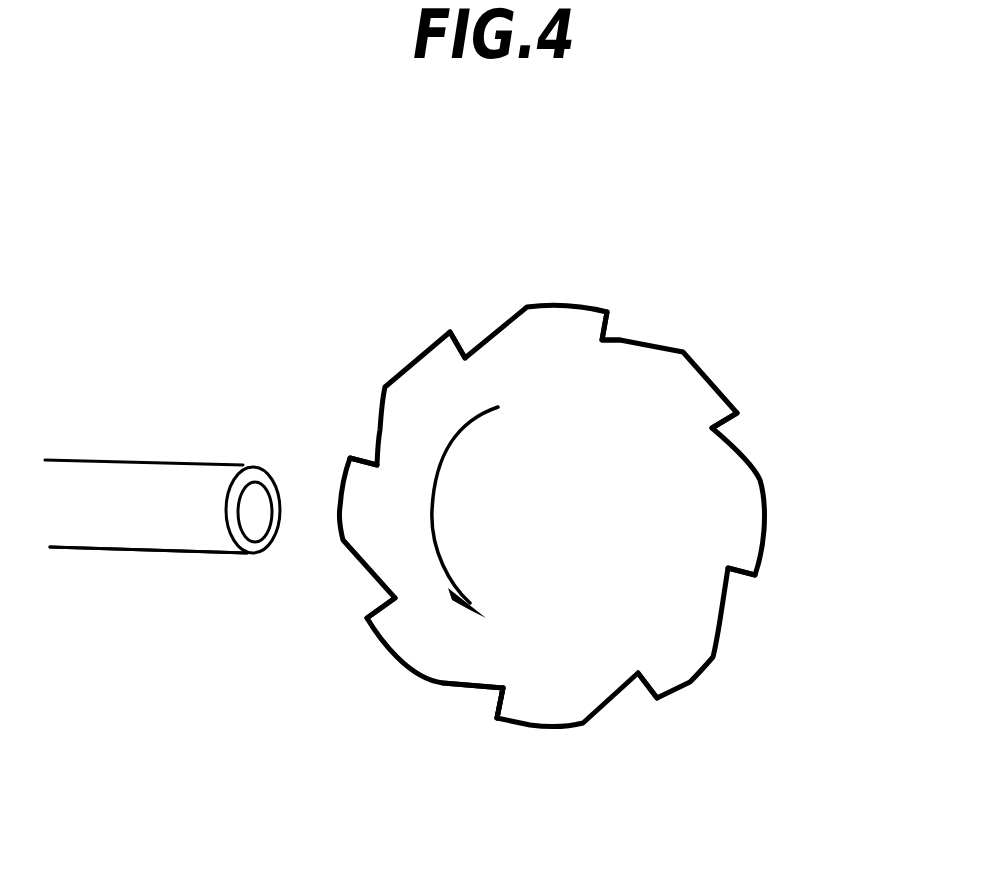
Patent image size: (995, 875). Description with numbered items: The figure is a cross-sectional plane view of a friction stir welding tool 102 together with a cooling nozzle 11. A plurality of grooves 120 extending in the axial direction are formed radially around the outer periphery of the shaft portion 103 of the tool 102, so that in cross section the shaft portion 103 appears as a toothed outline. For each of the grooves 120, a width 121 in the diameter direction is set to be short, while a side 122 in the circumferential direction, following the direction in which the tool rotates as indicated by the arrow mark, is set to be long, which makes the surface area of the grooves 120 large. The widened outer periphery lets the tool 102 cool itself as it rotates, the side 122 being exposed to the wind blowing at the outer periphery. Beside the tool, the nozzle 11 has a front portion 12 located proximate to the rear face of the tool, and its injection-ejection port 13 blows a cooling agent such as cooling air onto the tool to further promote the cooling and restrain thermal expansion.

The nozzle 11 is at (88, 457).
The front portion 12 is at (162, 533).
The injection-ejection port 13 is at (255, 498).
The tool 102 is at (772, 363).
The shaft portion 103 is at (635, 428).
The grooves 120 is at (468, 333).
The width 121 is at (493, 700).
The side 122 is at (448, 683).